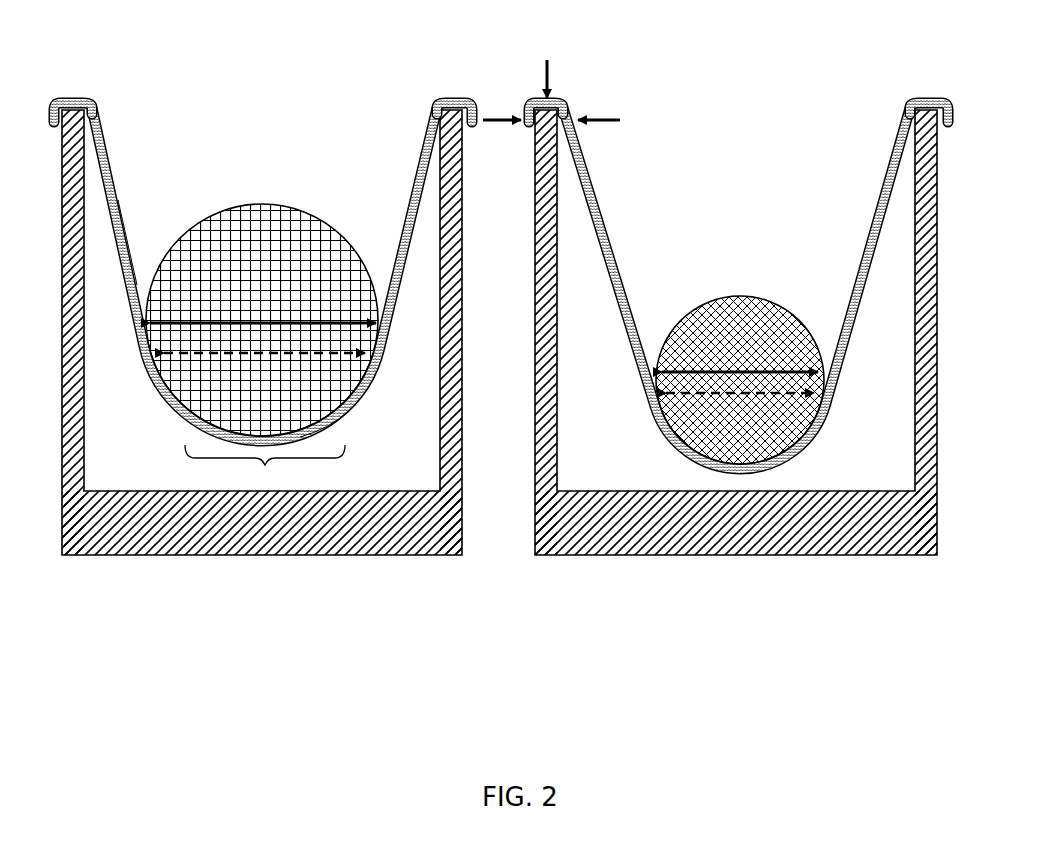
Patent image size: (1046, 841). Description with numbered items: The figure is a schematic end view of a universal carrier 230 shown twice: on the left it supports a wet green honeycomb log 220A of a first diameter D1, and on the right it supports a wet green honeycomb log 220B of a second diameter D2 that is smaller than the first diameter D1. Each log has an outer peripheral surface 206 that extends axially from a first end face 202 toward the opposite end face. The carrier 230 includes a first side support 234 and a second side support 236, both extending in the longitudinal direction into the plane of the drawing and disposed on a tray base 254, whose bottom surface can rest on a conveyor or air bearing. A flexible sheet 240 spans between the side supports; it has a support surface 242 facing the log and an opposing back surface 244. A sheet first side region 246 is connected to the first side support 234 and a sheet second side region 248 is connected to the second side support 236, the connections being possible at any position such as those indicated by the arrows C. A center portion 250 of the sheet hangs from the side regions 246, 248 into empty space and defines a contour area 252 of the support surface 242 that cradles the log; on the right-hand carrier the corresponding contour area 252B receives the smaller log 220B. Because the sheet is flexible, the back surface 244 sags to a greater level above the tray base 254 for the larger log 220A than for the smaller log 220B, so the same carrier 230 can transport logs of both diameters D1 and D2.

The first end face 202 is at (293, 227).
The outer peripheral surface 206 is at (262, 205).
The wet green honeycomb log of a first diameter 220A is at (260, 256).
The wet green honeycomb log of a second diameter 220B is at (738, 293).
The universal carrier 230 is at (499, 383).
The first side support 234 is at (87, 192).
The second side support 236 is at (437, 150).
The flexible sheet 240 is at (263, 221).
The support surface 242 is at (132, 238).
The back surface 244 is at (357, 420).
The sheet first side region 246 is at (98, 106).
The sheet second side region 248 is at (430, 104).
The center portion 250 is at (273, 462).
The contour area 252 is at (242, 355).
The contact diameter line B 252B is at (765, 392).
The tray base 254 is at (347, 537).
The first diameter D1 is at (233, 325).
The second diameter D2 is at (721, 370).
The arrows indicating connection position C is at (551, 90).